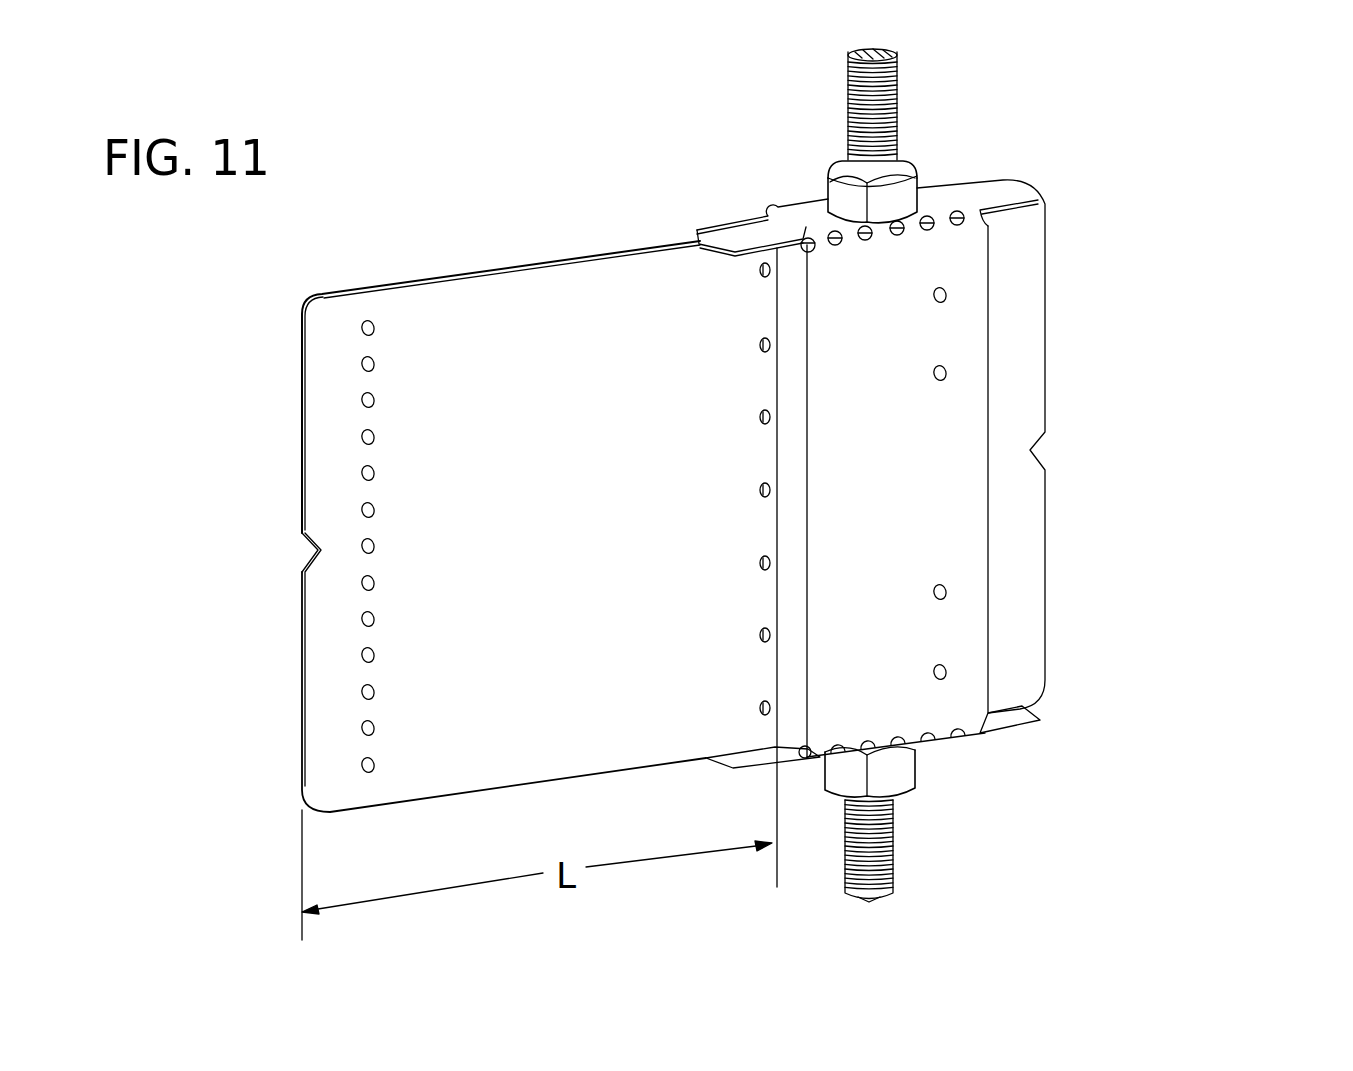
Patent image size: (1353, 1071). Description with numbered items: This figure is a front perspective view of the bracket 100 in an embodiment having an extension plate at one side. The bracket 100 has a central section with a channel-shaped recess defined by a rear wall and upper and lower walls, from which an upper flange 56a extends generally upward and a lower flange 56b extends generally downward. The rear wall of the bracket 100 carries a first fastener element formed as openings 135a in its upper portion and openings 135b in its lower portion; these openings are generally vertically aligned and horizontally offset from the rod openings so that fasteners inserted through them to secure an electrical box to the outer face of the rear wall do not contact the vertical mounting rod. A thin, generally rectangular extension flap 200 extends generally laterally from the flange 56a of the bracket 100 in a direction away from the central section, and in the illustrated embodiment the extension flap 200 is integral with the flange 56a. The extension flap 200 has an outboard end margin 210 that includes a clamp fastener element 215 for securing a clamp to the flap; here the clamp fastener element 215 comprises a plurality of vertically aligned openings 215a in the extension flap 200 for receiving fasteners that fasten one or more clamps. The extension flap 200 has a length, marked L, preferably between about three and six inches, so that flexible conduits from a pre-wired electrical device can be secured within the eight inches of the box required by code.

The bracket 100 is at (1088, 444).
The extension flap 200 is at (543, 265).
The outboard end margin 210 is at (405, 330).
The clamp fastener element 215 is at (338, 438).
The openings 215a is at (362, 582).
The upper flange 56a is at (705, 306).
The lower flange 56b is at (1032, 245).
The openings 135a is at (946, 372).
The openings 135b is at (946, 671).